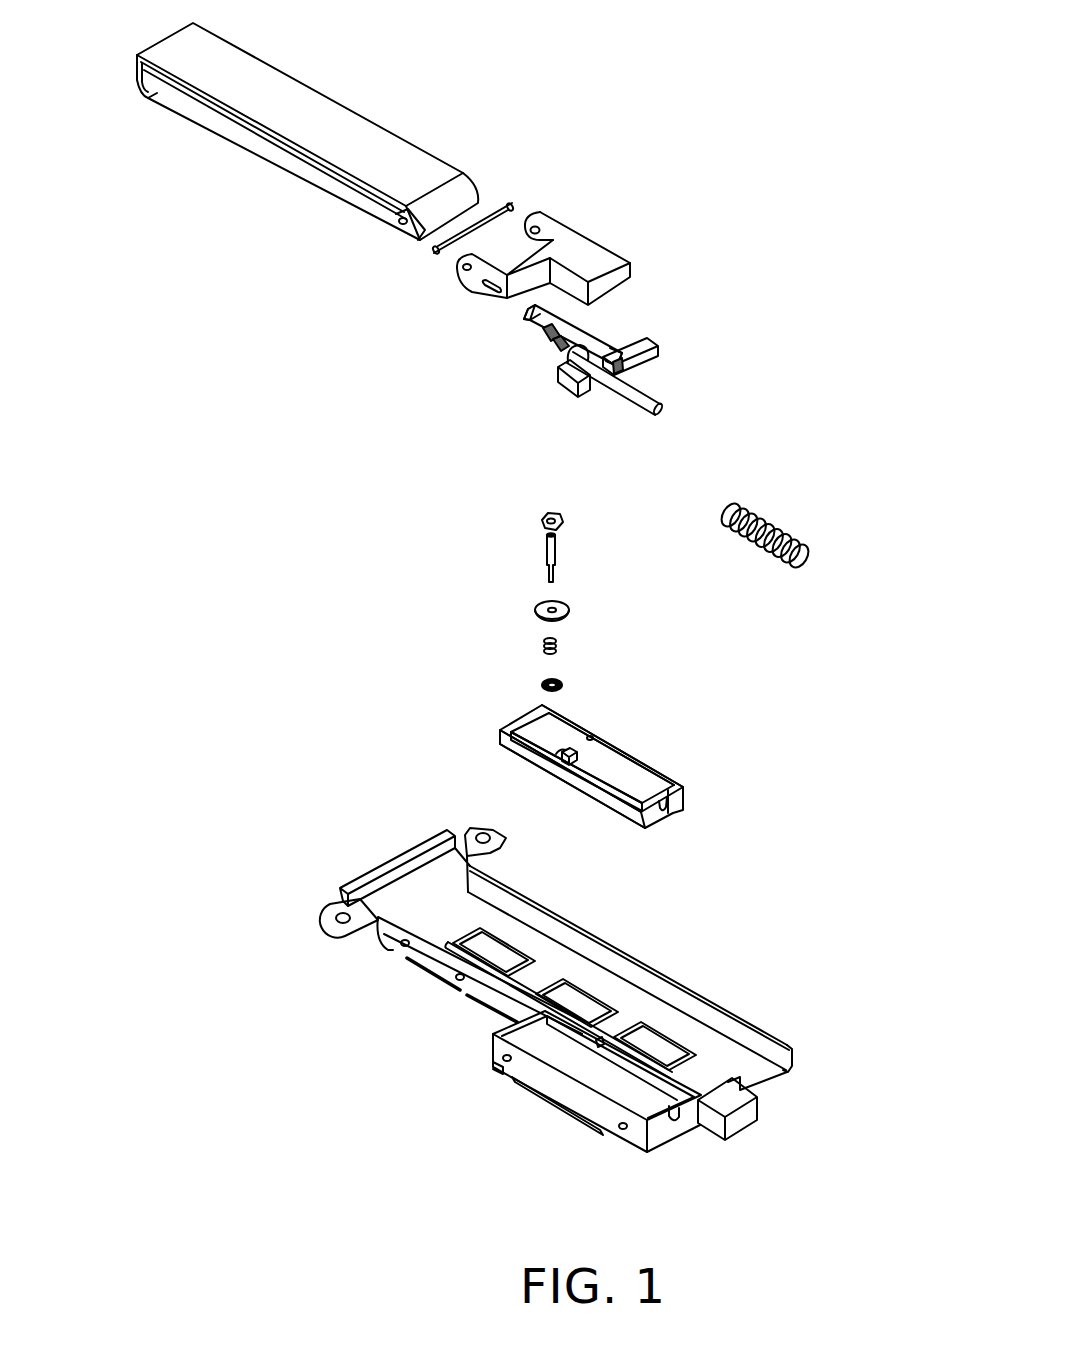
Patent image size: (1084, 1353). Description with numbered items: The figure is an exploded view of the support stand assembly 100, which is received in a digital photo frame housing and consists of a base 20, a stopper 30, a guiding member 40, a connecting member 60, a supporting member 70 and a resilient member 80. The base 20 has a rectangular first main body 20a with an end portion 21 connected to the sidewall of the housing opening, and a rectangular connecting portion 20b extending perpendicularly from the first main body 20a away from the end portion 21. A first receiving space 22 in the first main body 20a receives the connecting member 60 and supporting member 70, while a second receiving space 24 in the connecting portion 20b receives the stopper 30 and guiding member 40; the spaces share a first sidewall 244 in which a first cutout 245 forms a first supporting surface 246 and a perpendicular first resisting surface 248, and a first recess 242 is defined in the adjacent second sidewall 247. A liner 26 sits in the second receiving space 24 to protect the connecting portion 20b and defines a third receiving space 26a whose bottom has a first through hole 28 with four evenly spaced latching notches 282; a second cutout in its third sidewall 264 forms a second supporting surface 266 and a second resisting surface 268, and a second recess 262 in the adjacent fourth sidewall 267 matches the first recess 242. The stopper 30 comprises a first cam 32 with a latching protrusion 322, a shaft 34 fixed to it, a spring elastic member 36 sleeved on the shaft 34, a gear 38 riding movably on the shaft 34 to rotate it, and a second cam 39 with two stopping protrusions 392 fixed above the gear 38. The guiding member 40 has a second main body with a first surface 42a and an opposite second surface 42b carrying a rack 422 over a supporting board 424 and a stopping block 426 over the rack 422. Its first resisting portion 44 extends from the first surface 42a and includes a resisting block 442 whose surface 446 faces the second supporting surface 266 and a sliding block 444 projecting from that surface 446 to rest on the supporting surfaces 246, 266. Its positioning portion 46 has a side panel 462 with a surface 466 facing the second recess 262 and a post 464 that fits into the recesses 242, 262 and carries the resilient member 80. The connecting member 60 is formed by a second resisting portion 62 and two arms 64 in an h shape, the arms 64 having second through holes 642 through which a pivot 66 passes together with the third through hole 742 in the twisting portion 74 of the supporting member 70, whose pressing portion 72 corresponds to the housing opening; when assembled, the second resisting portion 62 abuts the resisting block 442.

The support stand assembly 100 is at (628, 62).
The supporting member 70 is at (307, 161).
The pressing portion 72 is at (148, 78).
The twisting portion 74 is at (353, 183).
The third through hole 742 is at (397, 223).
The pivot 66 is at (510, 200).
The connecting member 60 is at (530, 241).
The arms 64 is at (548, 218).
The second resisting portion 62 is at (590, 253).
The second through holes 642 is at (462, 275).
The guiding member 40 is at (612, 368).
The supporting board 424 is at (545, 322).
The first surface 42a is at (583, 330).
The second surface 42b is at (530, 318).
The rack 422 is at (553, 340).
The stopping block 426 is at (560, 348).
The surface of side panel 466 is at (575, 350).
The first resisting portion 44 is at (714, 391).
The resisting block 442 is at (647, 345).
The sliding block 444 is at (650, 367).
The surface of resisting block 446 is at (635, 377).
The positioning portion 46 is at (587, 415).
The side panel 462 is at (567, 372).
The post 464 is at (622, 388).
The stopper 30 is at (579, 598).
The second cam 39 is at (550, 526).
The stopping protrusions 392 is at (540, 523).
The shaft 34 is at (555, 558).
The gear 38 is at (567, 610).
The elastic member 36 is at (557, 647).
The first cam 32 is at (549, 676).
The latching protrusion 322 is at (513, 675).
The resilient member 80 is at (780, 527).
The base 20 is at (427, 682).
The liner 26 is at (590, 775).
The third sidewall 264 is at (578, 728).
The second supporting surface 266 is at (645, 772).
The fourth sidewall 267 is at (685, 798).
The second resisting surface 268 is at (593, 737).
The second recess 262 is at (667, 810).
The third receiving space 26a is at (627, 785).
The first through hole 28 is at (568, 763).
The latching notches 282 is at (485, 769).
The first receiving space 22 is at (561, 959).
The end portion 21 is at (340, 907).
The first main body 20a is at (405, 957).
The first cutout 245 is at (635, 989).
The first resisting surface 248 is at (600, 1040).
The first supporting surface 246 is at (650, 1078).
The second receiving space 24 is at (650, 1122).
The first sidewall 244 is at (563, 1033).
The connecting portion 20b is at (640, 1137).
The first recess 242 is at (680, 1118).
The second sidewall 247 is at (700, 1125).